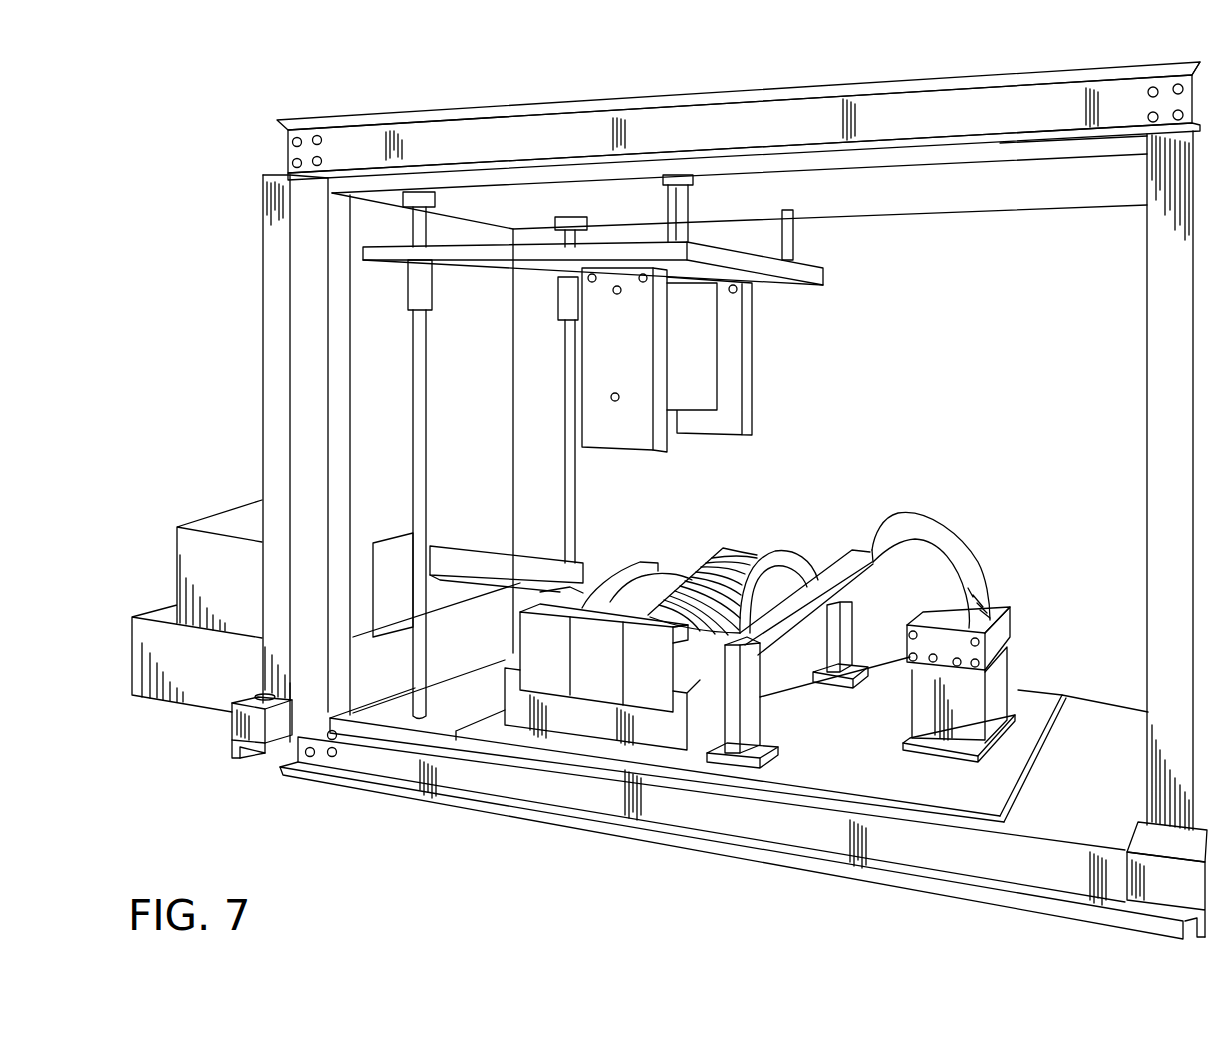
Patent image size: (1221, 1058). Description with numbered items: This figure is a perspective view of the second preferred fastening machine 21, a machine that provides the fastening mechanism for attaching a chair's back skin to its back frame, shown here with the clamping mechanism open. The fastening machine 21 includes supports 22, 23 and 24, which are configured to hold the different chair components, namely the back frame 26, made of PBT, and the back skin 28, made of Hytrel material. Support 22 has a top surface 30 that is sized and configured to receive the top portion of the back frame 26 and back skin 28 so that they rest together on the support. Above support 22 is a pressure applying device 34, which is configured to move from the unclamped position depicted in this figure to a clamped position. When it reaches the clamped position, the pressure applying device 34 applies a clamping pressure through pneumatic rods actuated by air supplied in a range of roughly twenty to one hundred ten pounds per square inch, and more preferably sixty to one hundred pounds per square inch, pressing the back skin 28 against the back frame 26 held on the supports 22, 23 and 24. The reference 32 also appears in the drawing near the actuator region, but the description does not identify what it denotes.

The fastening machine 21 is at (240, 234).
The support 22 is at (537, 673).
The support 23 is at (988, 652).
The support 24 is at (763, 722).
The back frame 26 is at (897, 512).
The back skin 28 is at (737, 557).
The top surface 30 is at (670, 538).
The actuator assembly 32 is at (498, 514).
The pressure applying device 34 is at (750, 367).